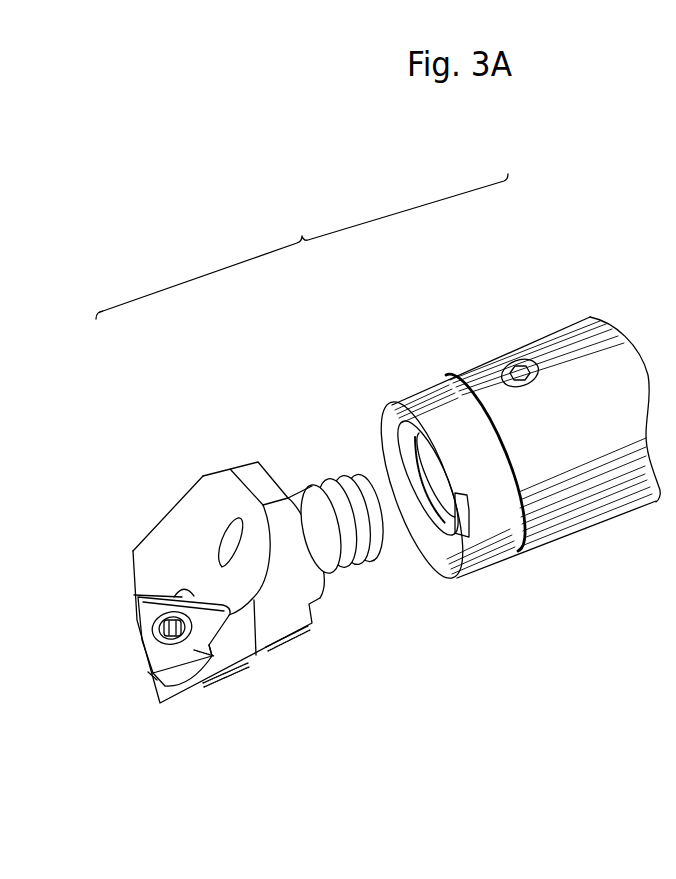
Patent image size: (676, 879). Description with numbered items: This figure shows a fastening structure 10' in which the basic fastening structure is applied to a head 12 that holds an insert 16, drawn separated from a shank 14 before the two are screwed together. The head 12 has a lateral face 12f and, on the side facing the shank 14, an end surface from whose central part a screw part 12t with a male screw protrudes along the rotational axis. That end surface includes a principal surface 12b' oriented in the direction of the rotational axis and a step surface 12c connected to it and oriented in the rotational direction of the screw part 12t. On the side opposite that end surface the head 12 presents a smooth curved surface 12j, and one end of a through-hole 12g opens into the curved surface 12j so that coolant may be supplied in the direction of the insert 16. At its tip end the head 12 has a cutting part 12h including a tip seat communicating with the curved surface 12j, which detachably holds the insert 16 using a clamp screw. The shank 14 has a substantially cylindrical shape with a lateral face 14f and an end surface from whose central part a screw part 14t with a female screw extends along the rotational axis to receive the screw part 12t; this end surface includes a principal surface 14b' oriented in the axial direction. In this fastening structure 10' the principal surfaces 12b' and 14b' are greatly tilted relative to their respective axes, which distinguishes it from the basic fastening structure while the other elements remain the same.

The fastening structure 10' is at (302, 246).
The head 12 is at (177, 440).
The curved surface 12j is at (162, 550).
The through-hole 12g is at (224, 555).
The principal surface 12b' is at (319, 477).
The step surface 12c is at (358, 534).
The screw part 12t is at (372, 560).
The lateral face 12f is at (289, 622).
The cutting part 12h is at (237, 650).
The insert 16 is at (173, 655).
The shank 14 is at (502, 429).
The screw part 14t is at (391, 402).
The lateral face 14f is at (554, 347).
The principal surface 14b' is at (440, 531).